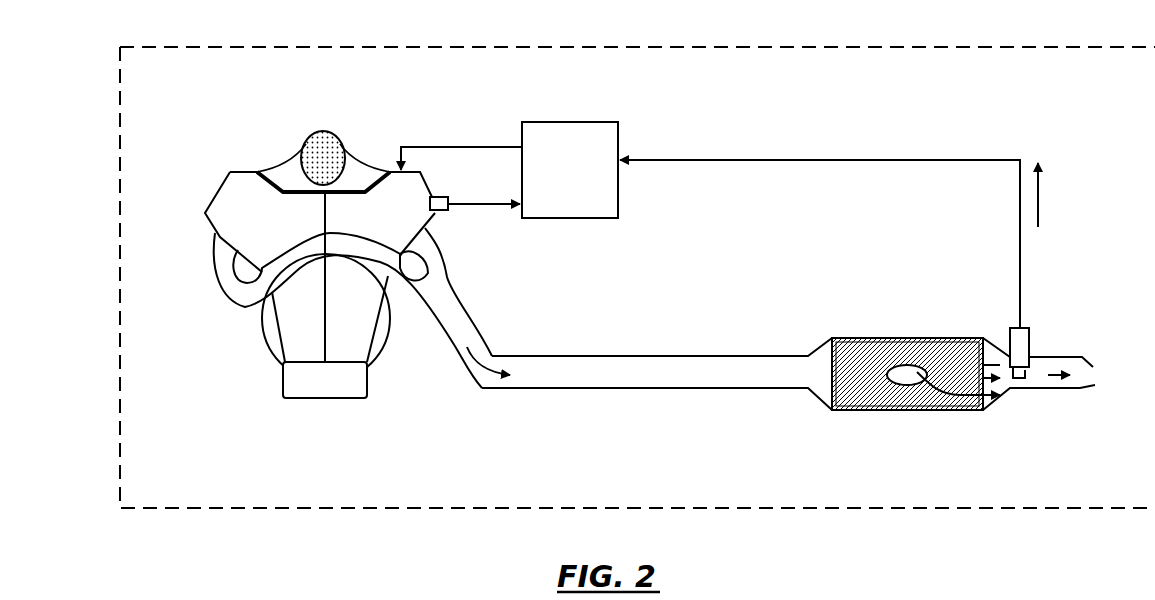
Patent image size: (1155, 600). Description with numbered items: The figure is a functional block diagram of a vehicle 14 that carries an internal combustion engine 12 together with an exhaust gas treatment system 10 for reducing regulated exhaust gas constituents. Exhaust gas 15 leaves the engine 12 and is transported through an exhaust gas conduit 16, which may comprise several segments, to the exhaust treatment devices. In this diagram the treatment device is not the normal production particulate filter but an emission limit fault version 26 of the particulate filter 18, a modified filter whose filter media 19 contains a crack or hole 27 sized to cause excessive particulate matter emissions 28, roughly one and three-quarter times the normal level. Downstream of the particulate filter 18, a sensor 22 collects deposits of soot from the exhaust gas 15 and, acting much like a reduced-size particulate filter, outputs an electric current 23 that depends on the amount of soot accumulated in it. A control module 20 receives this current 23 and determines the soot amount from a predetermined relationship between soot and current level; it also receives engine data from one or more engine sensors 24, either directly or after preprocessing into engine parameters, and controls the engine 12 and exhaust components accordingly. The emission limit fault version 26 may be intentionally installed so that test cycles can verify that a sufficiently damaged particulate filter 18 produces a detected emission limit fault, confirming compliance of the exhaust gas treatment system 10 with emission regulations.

The exhaust gas treatment system 10 is at (736, 150).
The internal combustion engine 12 is at (190, 172).
The vehicle 14 is at (1094, 93).
The exhaust gas 15 is at (468, 355).
The exhaust gas conduit 16 is at (494, 355).
The particulate filter 18 is at (965, 338).
The filter media 19 is at (850, 338).
The control module 20 is at (559, 177).
The sensor 22 is at (1032, 355).
The electric current 23 is at (1053, 195).
The engine sensor 24 is at (445, 211).
The emission limit fault version of the particulate filter 26 is at (885, 328).
The crack or hole 27 is at (893, 385).
The excessive particulate matter emissions 28 is at (920, 378).